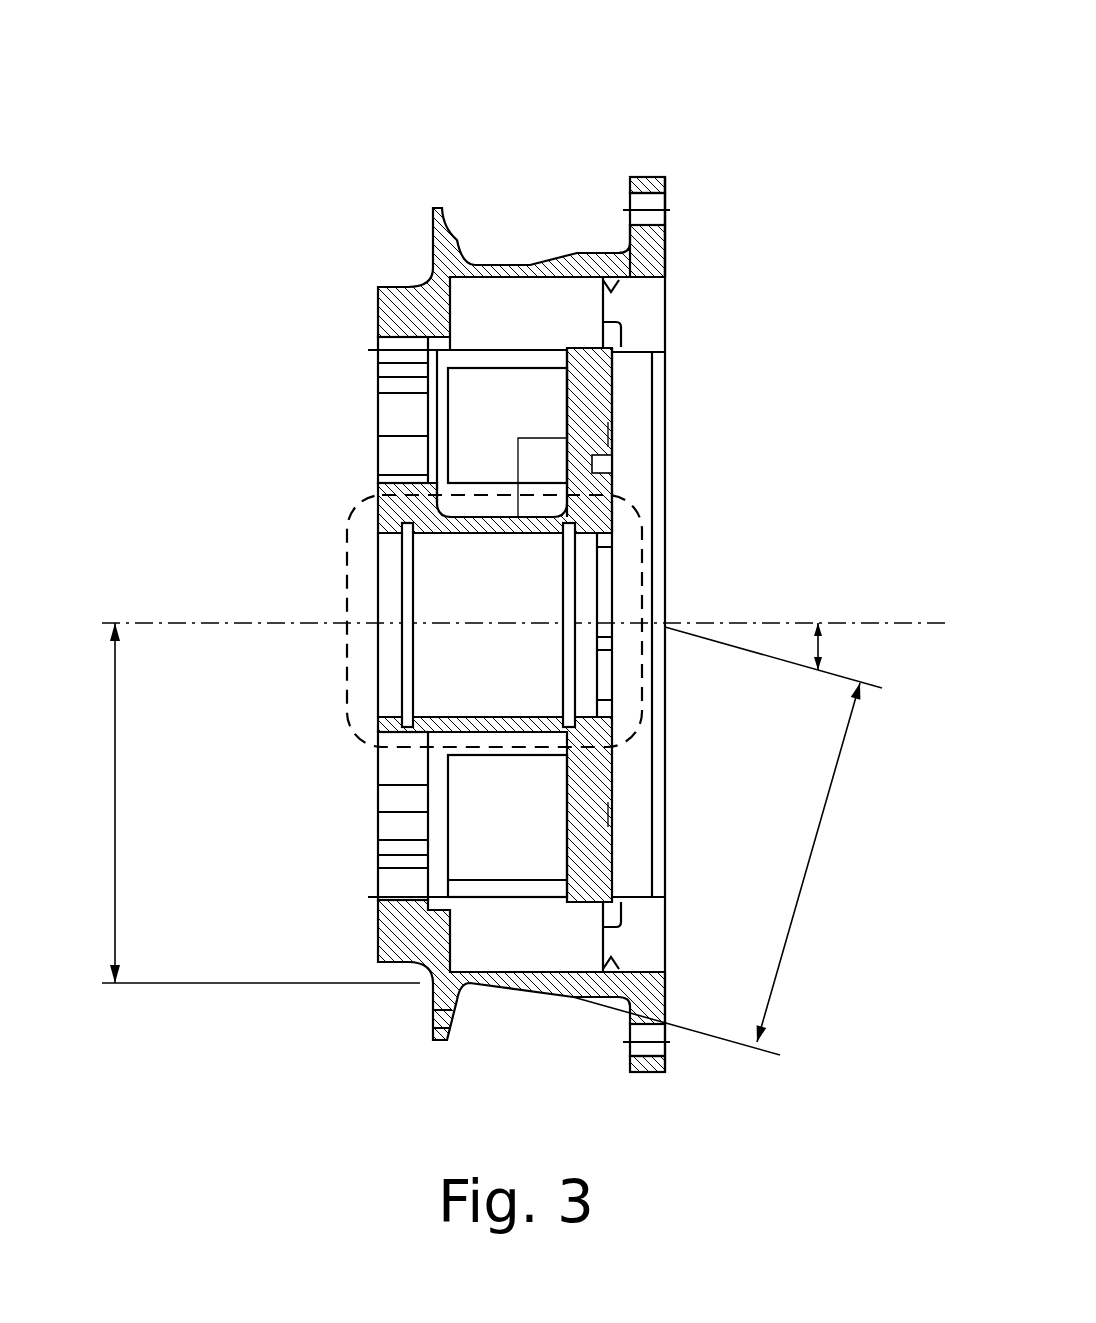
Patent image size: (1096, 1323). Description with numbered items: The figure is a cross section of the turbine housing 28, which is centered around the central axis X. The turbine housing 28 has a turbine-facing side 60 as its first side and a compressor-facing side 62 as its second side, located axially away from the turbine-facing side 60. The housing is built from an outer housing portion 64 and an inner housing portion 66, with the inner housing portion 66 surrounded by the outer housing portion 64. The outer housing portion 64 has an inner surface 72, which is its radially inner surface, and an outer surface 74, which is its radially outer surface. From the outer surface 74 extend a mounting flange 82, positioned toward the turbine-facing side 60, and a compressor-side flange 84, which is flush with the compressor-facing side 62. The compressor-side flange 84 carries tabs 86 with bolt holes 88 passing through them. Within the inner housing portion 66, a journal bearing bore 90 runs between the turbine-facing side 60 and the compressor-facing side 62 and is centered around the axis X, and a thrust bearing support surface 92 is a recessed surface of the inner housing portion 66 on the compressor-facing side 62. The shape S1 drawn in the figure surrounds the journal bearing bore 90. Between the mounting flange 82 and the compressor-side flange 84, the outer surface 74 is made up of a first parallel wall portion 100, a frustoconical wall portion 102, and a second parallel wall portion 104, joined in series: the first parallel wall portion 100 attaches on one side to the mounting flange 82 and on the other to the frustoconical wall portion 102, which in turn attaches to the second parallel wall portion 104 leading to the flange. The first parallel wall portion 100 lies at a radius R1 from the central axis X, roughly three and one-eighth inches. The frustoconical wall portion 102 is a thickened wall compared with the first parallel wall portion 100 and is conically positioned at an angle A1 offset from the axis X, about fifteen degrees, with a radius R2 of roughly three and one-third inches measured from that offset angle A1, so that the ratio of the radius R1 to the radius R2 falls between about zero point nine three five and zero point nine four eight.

The turbine housing 28 is at (779, 104).
The turbine-facing side 60 is at (378, 297).
The compressor-facing side 62 is at (665, 256).
The outer housing portion 64 is at (523, 190).
The inner housing portion 66 is at (682, 427).
The inner surface 72 is at (611, 283).
The outer surface 74 is at (558, 257).
The mounting flange 82 is at (433, 208).
The compressor-side flange 84 is at (665, 230).
The tabs 86 is at (648, 177).
The bolt holes 88 is at (630, 200).
The journal bearing bore 90 is at (380, 530).
The thrust bearing support surface 92 is at (613, 485).
The first parallel wall portion 100 is at (490, 985).
The frustoconical wall portion 102 is at (550, 997).
The second parallel wall portion 104 is at (615, 997).
The shape S1 is at (627, 507).
The angle A1 is at (818, 648).
The radius R1 is at (115, 780).
The radius R2 is at (803, 883).
The central axis X is at (895, 623).